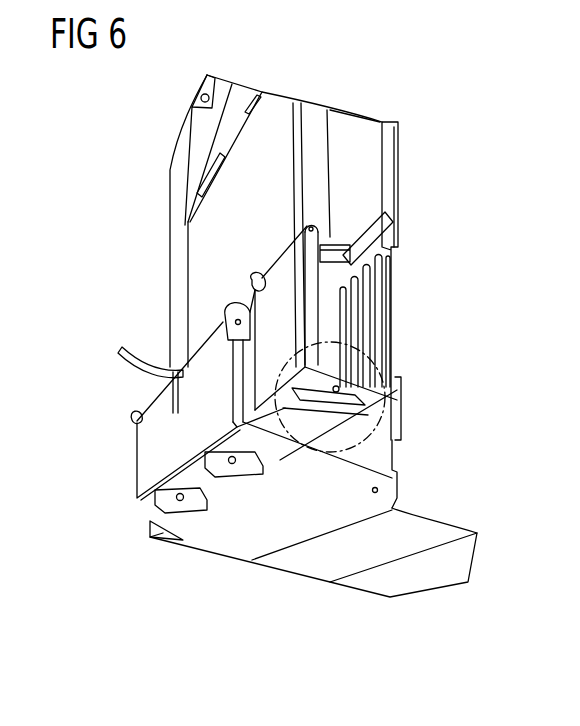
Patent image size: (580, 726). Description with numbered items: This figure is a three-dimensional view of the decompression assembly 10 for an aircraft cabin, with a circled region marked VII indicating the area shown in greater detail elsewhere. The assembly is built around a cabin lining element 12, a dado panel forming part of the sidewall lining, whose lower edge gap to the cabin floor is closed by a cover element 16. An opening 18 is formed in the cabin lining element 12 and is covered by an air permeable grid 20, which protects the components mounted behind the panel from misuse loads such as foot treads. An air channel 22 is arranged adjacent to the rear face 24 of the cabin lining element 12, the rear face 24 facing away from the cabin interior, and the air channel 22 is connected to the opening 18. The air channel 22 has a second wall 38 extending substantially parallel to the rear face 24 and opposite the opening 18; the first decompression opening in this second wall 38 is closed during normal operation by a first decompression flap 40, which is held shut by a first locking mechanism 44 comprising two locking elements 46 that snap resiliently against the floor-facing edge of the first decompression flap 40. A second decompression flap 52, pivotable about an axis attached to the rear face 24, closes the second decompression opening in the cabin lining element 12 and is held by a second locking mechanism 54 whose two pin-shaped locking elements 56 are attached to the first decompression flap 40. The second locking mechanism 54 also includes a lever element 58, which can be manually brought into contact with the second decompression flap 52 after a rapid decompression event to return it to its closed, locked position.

The decompression assembly 10 is at (437, 147).
The cabin lining element 12 is at (230, 87).
The cover element 16 is at (463, 573).
The opening 18 is at (390, 355).
The air permeable grid 20 is at (390, 317).
The air channel 22 is at (390, 230).
The rear face 24 is at (180, 135).
The second wall 38 is at (128, 473).
The first decompression flap 40 is at (143, 453).
The first locking mechanism 44 is at (148, 518).
The locking element 46 is at (220, 472).
The second decompression flap 52 is at (202, 245).
The second locking mechanism 54 is at (333, 237).
The locking element 56 is at (355, 258).
The lever element 58 is at (163, 360).
The detail view VII is at (404, 430).